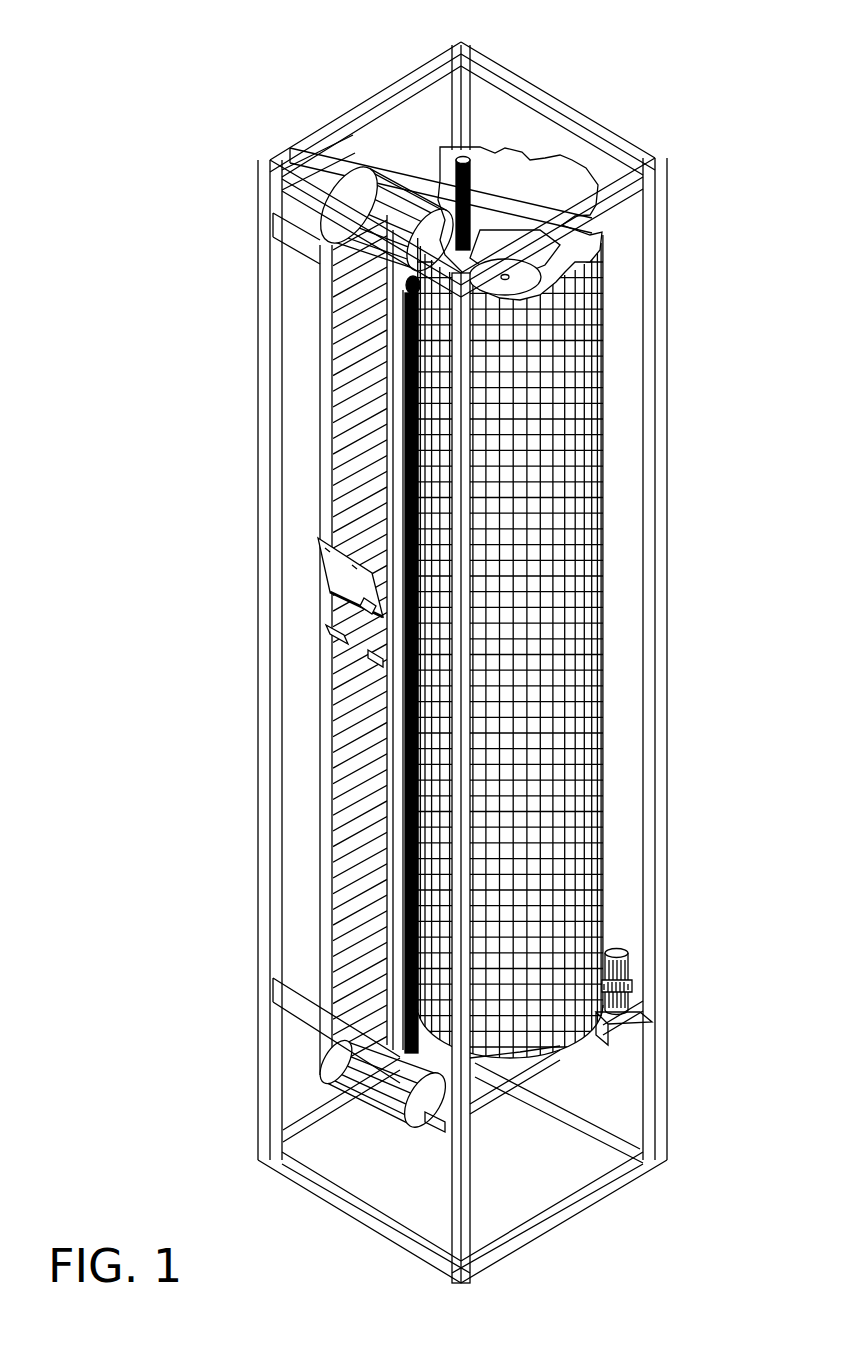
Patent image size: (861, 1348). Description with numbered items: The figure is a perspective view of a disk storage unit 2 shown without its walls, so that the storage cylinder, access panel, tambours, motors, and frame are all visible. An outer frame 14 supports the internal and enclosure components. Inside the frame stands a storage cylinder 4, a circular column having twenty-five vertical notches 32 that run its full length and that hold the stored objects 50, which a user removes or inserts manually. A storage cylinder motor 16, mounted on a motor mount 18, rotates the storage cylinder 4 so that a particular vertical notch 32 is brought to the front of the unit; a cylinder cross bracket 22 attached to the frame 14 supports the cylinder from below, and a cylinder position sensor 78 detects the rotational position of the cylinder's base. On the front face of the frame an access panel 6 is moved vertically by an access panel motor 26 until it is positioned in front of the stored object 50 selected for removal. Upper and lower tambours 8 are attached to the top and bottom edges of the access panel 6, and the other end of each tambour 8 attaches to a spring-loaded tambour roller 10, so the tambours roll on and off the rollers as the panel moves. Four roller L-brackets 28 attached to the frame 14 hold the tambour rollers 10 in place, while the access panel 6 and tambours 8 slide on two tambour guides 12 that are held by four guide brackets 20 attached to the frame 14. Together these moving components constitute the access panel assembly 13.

The disk storage unit 2 is at (688, 675).
The storage cylinder 4 is at (617, 569).
The access panel 6 is at (340, 606).
The tambour 8 is at (343, 385).
The tambour roller 10 is at (320, 153).
The tambour guide 12 is at (393, 477).
The access panel assembly 13 is at (290, 621).
The outer frame 14 is at (650, 776).
The storage cylinder motor 16 is at (622, 952).
The motor mount 18 is at (608, 1018).
The guide bracket 20 is at (287, 237).
The cylinder cross bracket 22 is at (535, 1071).
The access panel motor 26 is at (407, 284).
The roller L-bracket 28 is at (290, 188).
The vertical notch 32 is at (575, 165).
The stored object 50 is at (552, 200).
The cylinder position sensor 78 is at (513, 1058).